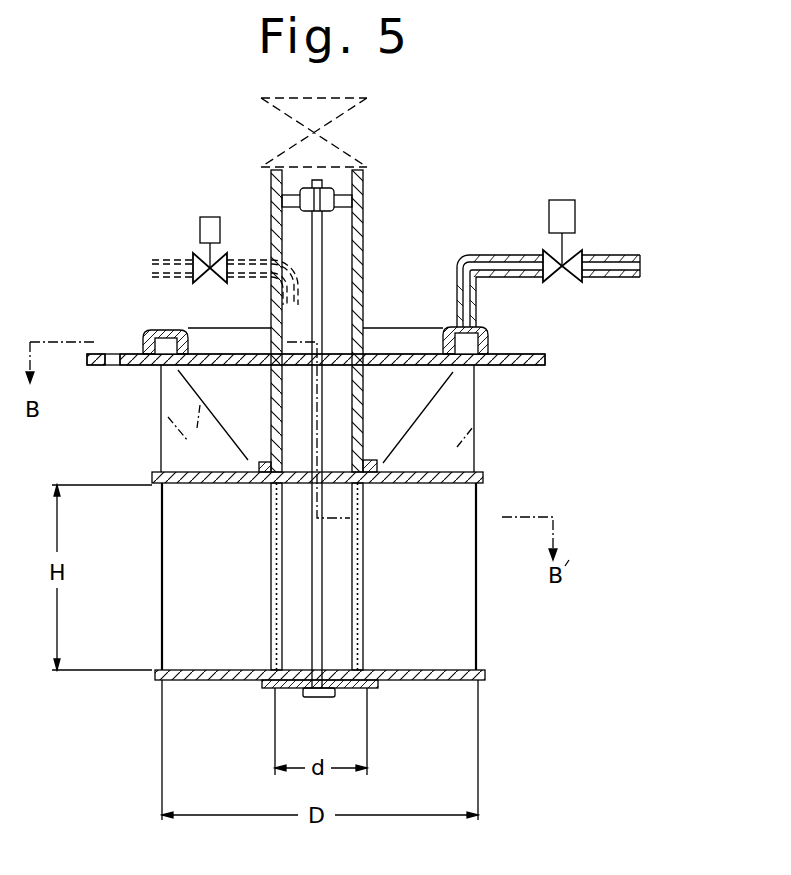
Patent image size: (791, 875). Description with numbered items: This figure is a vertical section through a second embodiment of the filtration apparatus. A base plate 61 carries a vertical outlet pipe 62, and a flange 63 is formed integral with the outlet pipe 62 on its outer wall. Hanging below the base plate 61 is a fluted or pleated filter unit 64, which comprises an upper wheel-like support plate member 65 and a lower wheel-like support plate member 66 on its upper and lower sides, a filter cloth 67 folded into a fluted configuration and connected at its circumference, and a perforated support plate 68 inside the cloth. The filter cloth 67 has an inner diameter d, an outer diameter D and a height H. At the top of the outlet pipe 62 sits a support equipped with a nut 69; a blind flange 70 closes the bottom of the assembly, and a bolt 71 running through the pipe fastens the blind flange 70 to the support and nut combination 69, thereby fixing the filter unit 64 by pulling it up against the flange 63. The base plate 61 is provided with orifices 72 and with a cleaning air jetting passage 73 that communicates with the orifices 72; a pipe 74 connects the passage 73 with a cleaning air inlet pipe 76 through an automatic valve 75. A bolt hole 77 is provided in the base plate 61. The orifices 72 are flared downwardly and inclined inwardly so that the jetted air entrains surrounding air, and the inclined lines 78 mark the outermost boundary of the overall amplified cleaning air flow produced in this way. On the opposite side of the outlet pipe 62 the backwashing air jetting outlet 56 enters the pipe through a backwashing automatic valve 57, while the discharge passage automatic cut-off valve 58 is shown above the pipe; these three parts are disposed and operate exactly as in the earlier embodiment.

The backwashing air jetting outlet 56 is at (250, 278).
The backwashing automatic valve 57 is at (204, 282).
The discharge passage automatic cut-off valve 58 is at (350, 114).
The base plate 61 is at (88, 367).
The outlet pipe 62 is at (363, 243).
The flange 63 is at (373, 457).
The fluted or pleated filter unit 64 is at (357, 589).
The upper wheel-like support plate member 65 is at (484, 472).
The lower wheel-like support plate member 66 is at (486, 672).
The filter cloth 67 is at (477, 580).
The perforated support plate 68 is at (355, 548).
The support equipped with a nut 69 is at (342, 195).
The blind flange 70 is at (347, 690).
The bolt 71 is at (303, 698).
The orifices 72 is at (157, 368).
The cleaning air jetting passage 73 is at (489, 337).
The pipe 74 is at (487, 256).
The automatic valve 75 is at (584, 256).
The cleaning air inlet pipe 76 is at (634, 256).
The bolt hole 77 is at (112, 367).
The inclined lines 78 is at (423, 450).